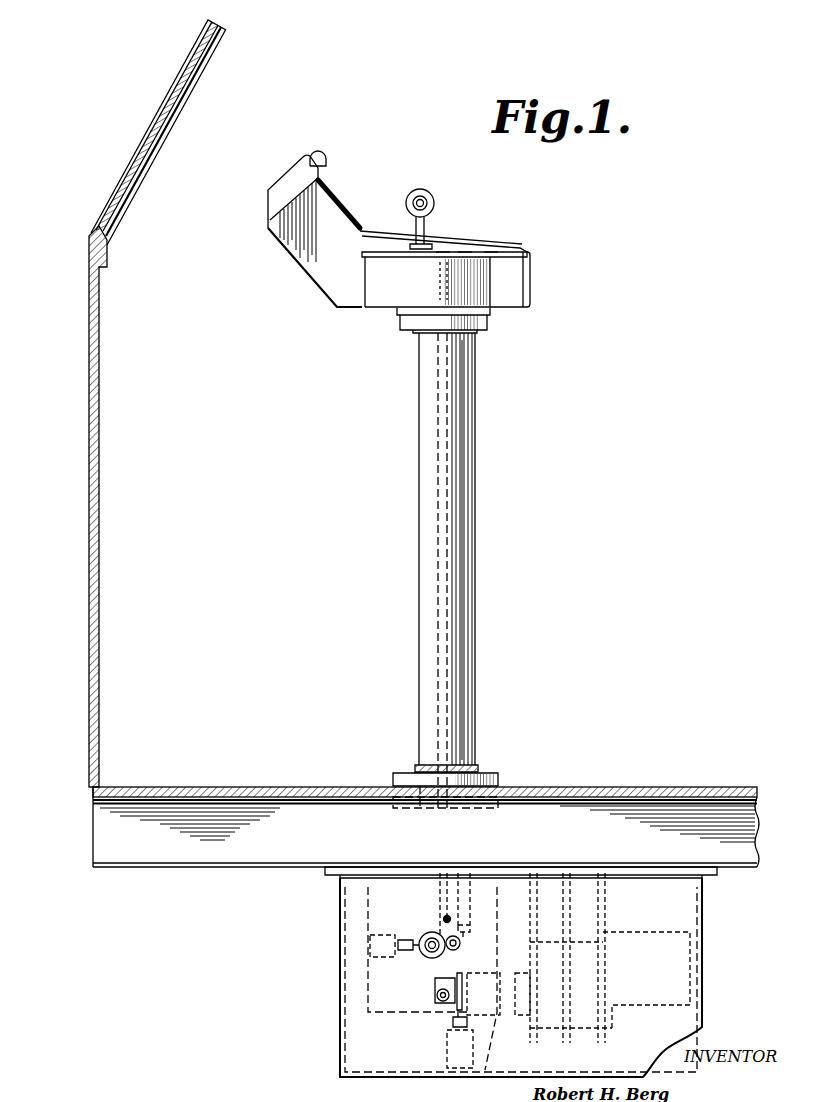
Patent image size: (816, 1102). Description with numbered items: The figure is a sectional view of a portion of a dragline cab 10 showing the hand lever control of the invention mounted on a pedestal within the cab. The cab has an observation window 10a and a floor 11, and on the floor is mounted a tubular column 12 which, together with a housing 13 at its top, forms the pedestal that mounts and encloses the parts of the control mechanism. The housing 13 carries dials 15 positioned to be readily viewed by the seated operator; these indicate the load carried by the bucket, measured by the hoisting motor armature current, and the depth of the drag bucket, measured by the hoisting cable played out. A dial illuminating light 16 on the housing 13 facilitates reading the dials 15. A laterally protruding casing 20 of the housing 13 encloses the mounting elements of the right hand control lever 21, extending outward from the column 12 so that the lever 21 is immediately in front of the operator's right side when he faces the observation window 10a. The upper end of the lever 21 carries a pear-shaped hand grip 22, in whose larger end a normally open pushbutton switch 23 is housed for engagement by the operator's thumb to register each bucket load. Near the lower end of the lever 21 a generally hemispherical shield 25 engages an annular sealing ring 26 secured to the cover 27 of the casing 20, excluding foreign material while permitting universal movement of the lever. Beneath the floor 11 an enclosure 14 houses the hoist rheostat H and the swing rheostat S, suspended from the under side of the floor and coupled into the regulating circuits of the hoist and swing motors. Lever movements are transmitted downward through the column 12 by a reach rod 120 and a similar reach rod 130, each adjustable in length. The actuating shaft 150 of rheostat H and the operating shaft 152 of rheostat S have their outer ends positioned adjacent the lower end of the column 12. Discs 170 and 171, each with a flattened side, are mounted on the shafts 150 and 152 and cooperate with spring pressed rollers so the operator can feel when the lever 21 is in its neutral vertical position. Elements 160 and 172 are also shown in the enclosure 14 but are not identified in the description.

The dragline cab 10 is at (86, 322).
The observation window 10a is at (177, 90).
The floor 11 is at (604, 787).
The tubular column 12 is at (474, 415).
The housing 13 is at (536, 261).
The enclosure 14 is at (340, 982).
The dials 15 is at (350, 205).
The dial illuminating light 16 is at (316, 150).
The casing 20 is at (388, 300).
The control lever 21 is at (426, 232).
The hand grip 22 is at (434, 206).
The pushbutton switch 23 is at (420, 192).
The hemispherical shield 25 is at (441, 250).
The annular sealing ring 26 is at (466, 250).
The cover 27 is at (493, 248).
The reach rod 120 is at (468, 563).
The reach rod 130 is at (440, 641).
The actuating shaft 150 is at (426, 938).
The operating shaft 152 is at (498, 1009).
The second motor 160 is at (430, 1005).
The disc 170 is at (430, 960).
The disc 171 is at (456, 1010).
The relay 172 is at (448, 1053).
The hoist rheostat H is at (362, 914).
The swing rheostat S is at (686, 928).